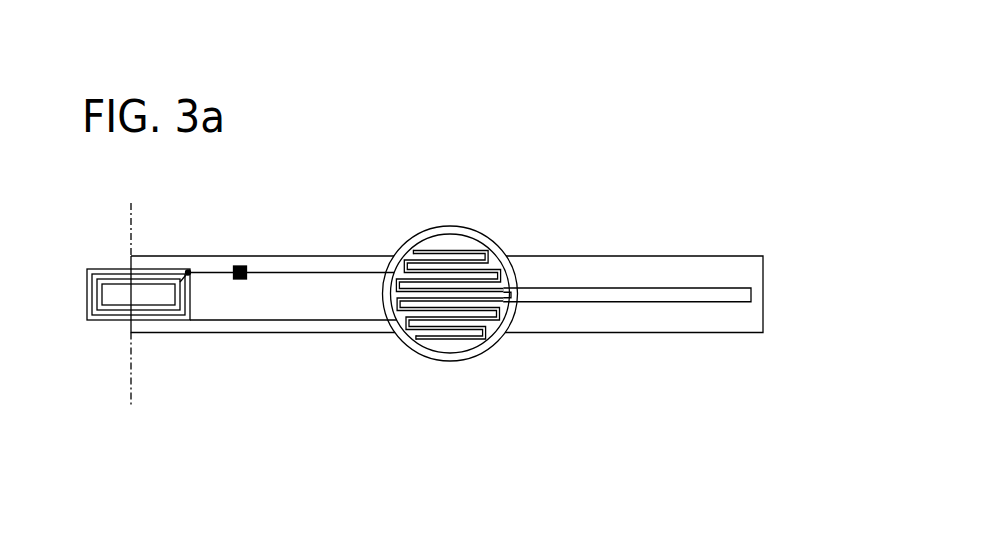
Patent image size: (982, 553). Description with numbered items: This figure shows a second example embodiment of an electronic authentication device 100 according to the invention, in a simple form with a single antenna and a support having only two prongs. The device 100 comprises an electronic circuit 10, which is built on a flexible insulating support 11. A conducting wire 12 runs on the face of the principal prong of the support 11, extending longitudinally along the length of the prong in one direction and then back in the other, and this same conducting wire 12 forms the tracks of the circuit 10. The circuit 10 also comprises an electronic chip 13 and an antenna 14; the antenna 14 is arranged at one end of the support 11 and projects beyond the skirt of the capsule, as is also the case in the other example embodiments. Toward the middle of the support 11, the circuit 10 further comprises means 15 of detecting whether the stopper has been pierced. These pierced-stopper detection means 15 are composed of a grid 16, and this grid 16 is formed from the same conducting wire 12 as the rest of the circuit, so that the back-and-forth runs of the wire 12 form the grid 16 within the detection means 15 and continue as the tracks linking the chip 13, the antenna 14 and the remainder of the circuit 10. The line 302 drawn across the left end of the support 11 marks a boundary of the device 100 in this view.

The electronic authentication device 100 is at (664, 115).
The electronic circuit 10 is at (772, 271).
The flexible insulating support 11 is at (725, 272).
The conducting wire 12 is at (322, 271).
The electronic chip 13 is at (234, 262).
The antenna 14 is at (114, 265).
The means of detecting if the stopper has been pierced 15 is at (421, 225).
The grid 16 is at (442, 313).
The fold line 302 is at (126, 391).